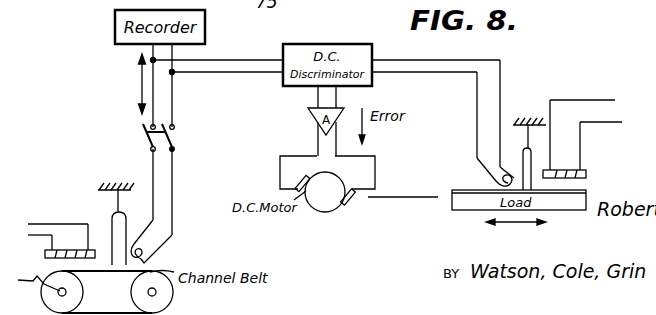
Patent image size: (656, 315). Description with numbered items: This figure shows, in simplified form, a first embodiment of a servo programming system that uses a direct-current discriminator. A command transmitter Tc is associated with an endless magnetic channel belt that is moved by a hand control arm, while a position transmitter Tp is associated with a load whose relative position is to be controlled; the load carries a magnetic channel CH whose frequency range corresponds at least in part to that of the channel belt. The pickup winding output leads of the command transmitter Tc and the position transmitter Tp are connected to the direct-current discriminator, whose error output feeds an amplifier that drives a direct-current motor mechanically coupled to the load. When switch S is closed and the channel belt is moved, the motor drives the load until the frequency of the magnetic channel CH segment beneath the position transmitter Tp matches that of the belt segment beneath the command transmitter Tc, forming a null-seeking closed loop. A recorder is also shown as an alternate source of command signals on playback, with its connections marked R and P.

The recorder input R is at (132, 68).
The recorder input P is at (132, 99).
The switch S is at (178, 140).
The command transmitter Tc is at (108, 229).
The position transmitter Tp is at (518, 157).
The magnetic channel CH is at (586, 192).